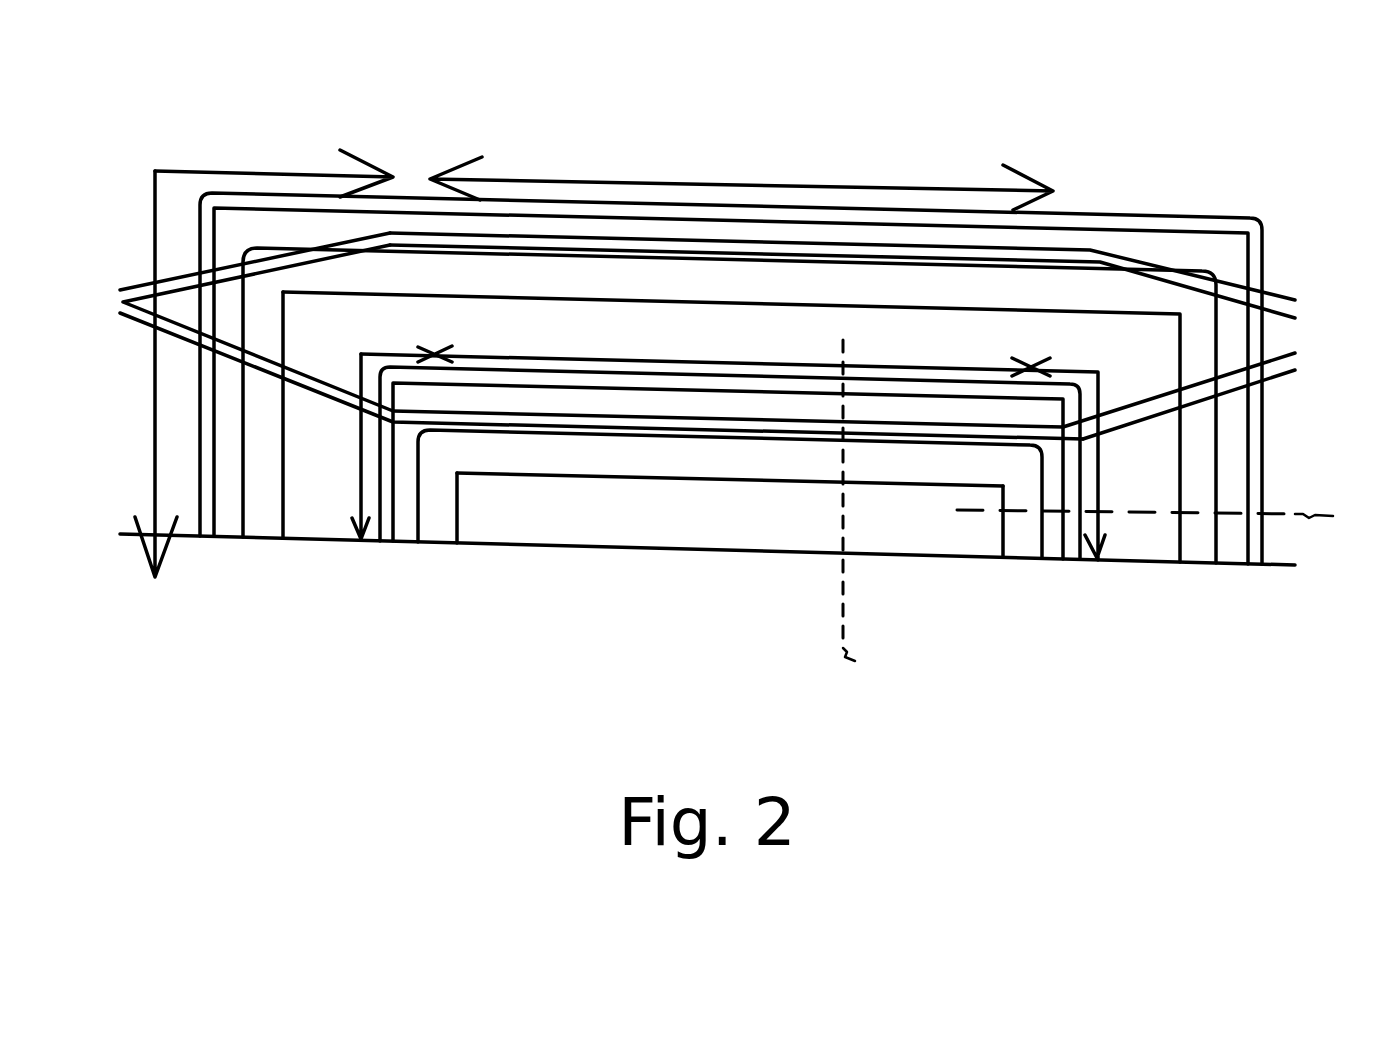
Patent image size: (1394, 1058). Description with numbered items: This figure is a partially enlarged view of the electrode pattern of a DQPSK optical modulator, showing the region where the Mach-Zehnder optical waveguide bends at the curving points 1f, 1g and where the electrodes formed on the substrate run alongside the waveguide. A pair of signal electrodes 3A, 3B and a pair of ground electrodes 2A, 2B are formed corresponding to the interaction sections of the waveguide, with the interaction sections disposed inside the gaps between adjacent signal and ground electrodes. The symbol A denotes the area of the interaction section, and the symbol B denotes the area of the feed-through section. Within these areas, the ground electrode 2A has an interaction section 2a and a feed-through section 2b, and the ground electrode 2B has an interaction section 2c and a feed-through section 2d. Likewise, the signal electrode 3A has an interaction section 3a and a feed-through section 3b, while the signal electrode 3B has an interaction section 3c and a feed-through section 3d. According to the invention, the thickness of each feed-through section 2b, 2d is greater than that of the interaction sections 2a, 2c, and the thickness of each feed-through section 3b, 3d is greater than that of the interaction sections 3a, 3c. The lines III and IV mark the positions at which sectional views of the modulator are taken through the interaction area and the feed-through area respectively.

The curving point 1f is at (387, 417).
The curving point 1g is at (1095, 442).
The interaction section 2a is at (798, 485).
The feed-through section 2b is at (412, 530).
The interaction section 2c is at (489, 300).
The feed-through section 2d is at (285, 330).
The ground electrode 2A is at (608, 482).
The ground electrode 2B is at (923, 304).
The interaction section 3a is at (577, 357).
The feed-through section 3b is at (378, 497).
The interaction section 3c is at (723, 204).
The feed-through section 3d is at (198, 500).
The signal electrode 3A is at (510, 390).
The signal electrode 3B is at (667, 214).
The area of the interaction section A is at (833, 185).
The area of the feed-through section B is at (153, 368).
The section line III is at (861, 523).
The section line IV is at (1168, 510).